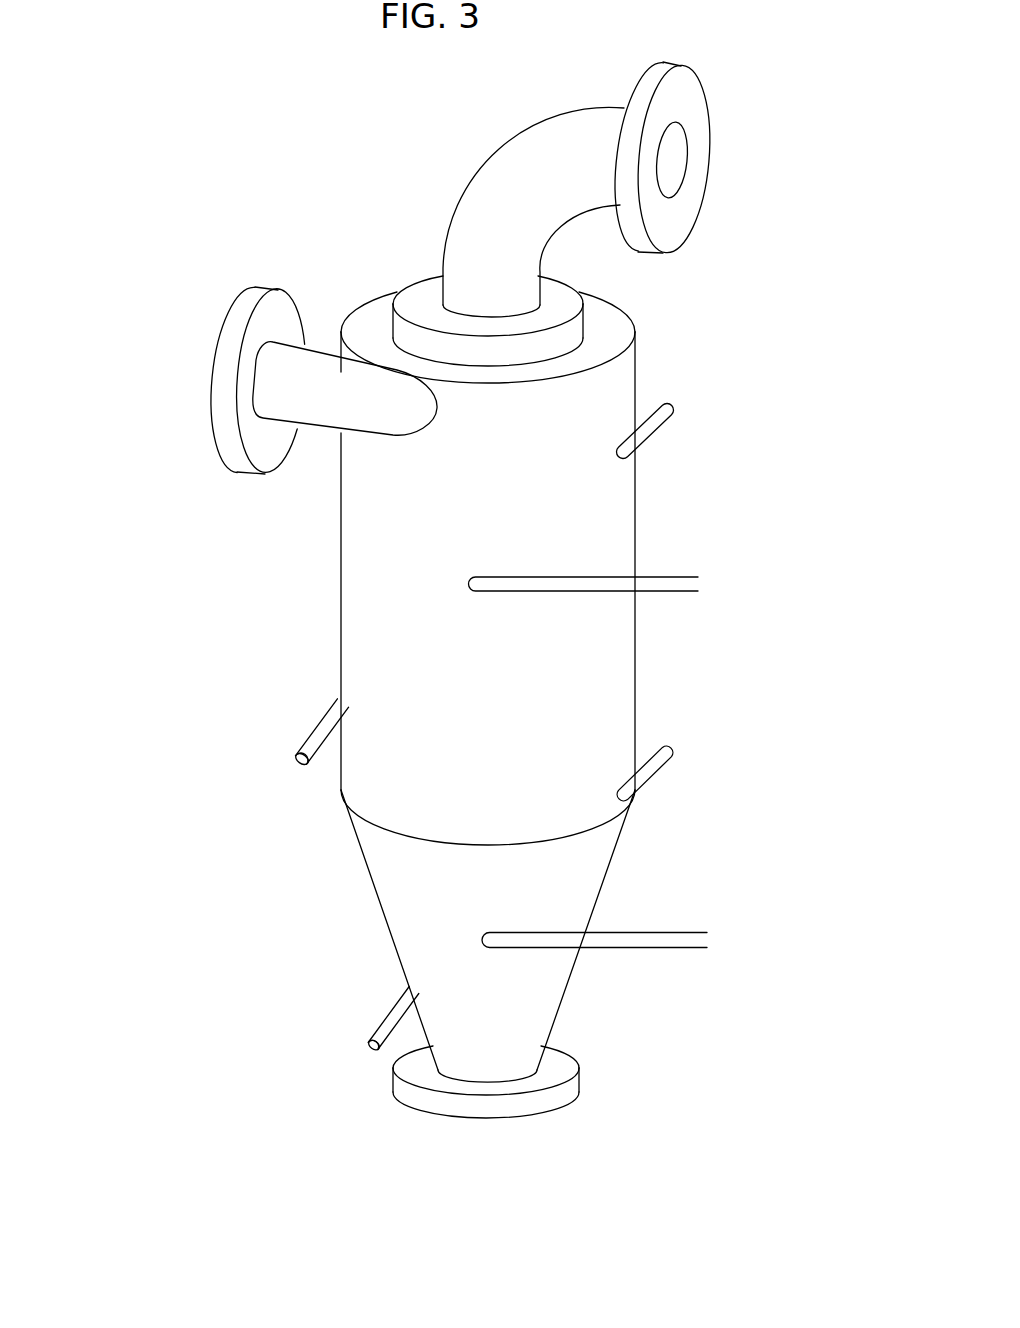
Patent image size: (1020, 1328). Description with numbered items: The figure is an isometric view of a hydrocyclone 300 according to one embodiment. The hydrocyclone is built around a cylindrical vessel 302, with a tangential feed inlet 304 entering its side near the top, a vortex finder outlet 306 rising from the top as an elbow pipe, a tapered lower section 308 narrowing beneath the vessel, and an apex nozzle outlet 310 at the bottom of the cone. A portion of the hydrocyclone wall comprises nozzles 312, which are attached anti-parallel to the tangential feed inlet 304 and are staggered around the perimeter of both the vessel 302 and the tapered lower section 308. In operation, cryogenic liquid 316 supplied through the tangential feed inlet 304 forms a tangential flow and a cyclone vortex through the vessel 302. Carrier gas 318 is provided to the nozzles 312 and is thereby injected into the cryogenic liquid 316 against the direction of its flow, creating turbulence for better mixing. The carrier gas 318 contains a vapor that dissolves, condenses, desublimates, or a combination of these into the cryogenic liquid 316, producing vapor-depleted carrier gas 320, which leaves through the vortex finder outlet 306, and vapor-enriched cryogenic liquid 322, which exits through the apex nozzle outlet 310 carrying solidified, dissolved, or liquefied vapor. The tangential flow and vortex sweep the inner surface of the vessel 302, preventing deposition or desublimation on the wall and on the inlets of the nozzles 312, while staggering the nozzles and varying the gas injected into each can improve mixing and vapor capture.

The hydrocyclone 300 is at (192, 180).
The vessel 302 is at (622, 390).
The tangential feed inlet 304 is at (265, 452).
The vortex finder outlet 306 is at (543, 155).
The tapered lower section 308 is at (398, 872).
The apex nozzle outlet 310 is at (422, 1070).
The nozzles 312 is at (568, 587).
The cryogenic liquid 316 is at (203, 368).
The carrier gas 318 is at (715, 585).
The vapor-depleted carrier gas 320 is at (672, 163).
The vapor-enriched cryogenic liquid 322 is at (488, 1242).